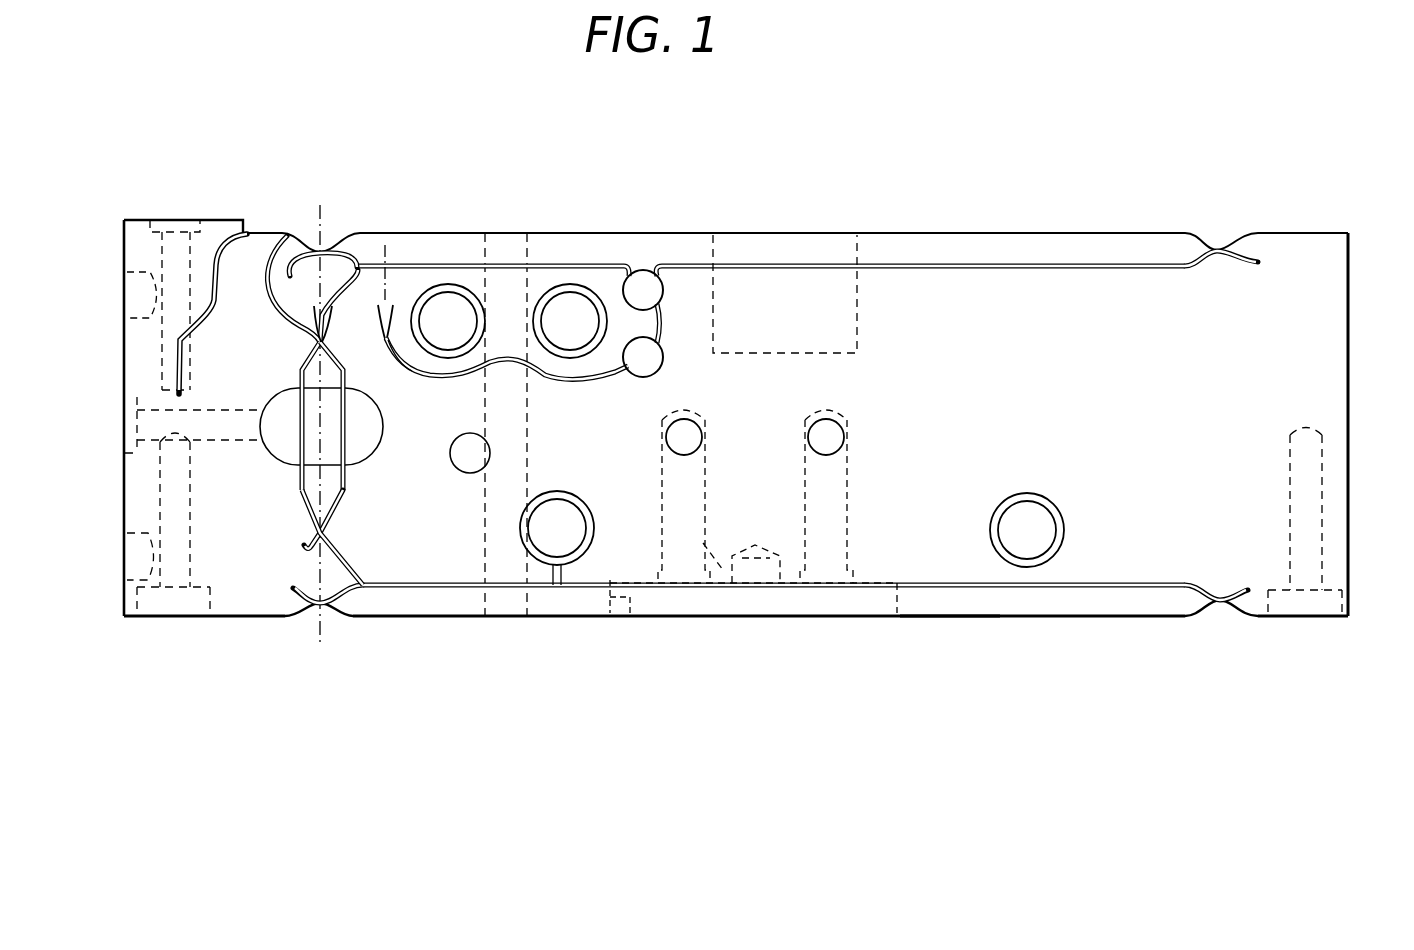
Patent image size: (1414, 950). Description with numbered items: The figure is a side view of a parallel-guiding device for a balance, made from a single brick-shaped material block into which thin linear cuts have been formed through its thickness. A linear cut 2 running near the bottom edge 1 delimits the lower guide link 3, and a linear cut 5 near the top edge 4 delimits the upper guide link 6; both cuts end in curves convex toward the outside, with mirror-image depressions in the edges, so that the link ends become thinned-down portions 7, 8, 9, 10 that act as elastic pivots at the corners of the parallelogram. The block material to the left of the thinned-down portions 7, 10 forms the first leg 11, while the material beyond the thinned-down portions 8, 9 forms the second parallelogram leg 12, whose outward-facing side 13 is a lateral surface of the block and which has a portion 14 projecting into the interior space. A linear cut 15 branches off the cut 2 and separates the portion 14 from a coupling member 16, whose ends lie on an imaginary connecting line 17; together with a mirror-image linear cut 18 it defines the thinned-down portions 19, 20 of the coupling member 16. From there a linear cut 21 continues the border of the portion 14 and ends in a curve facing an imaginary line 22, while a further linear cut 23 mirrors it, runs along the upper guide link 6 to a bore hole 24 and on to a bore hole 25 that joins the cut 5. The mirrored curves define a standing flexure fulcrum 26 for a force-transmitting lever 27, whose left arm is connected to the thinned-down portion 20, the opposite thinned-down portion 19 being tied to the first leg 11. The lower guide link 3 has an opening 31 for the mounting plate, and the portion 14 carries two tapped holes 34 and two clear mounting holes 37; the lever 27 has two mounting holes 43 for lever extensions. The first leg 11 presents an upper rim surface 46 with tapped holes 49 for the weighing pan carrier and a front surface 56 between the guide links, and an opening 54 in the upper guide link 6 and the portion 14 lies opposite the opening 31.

The bottom edge 1 is at (1077, 618).
The linear cut 2 is at (1032, 588).
The lower guide link 3 is at (965, 603).
The top edge 4 is at (1000, 235).
The linear cut 5 is at (1088, 265).
The upper guide link 6 is at (1063, 248).
The thinned-down portion 7 is at (322, 606).
The thinned-down portion 8 is at (1220, 603).
The thinned-down portion 9 is at (1225, 249).
The thinned-down portion 10 is at (330, 250).
The first leg 11 is at (236, 575).
The second parallelogram leg 12 is at (1330, 380).
The outward-facing side 13 is at (1350, 312).
The portion 14 is at (1075, 418).
The linear cut 15 is at (344, 460).
The coupling member 16 is at (313, 515).
The imaginary connecting line 17 is at (387, 290).
The linear cut 18 is at (300, 494).
The thinned-down portion 19 is at (328, 528).
The thinned-down portion 20 is at (284, 236).
The linear cut 21 is at (368, 352).
The imaginary line 22 is at (403, 287).
The linear cut 23 is at (508, 357).
The bore hole 24 is at (650, 360).
The bore hole 25 is at (640, 288).
The standing flexure fulcrum 26 is at (396, 352).
The force-transmitting lever 27 is at (457, 310).
The opening 31 is at (628, 622).
The tapped holes 34 is at (778, 622).
The mounting holes 37 is at (567, 555).
The mounting holes 43 is at (478, 292).
The upper rim surface 46 is at (141, 218).
The tapped holes 49 is at (126, 338).
The opening 54 is at (815, 295).
The front surface 56 is at (123, 387).